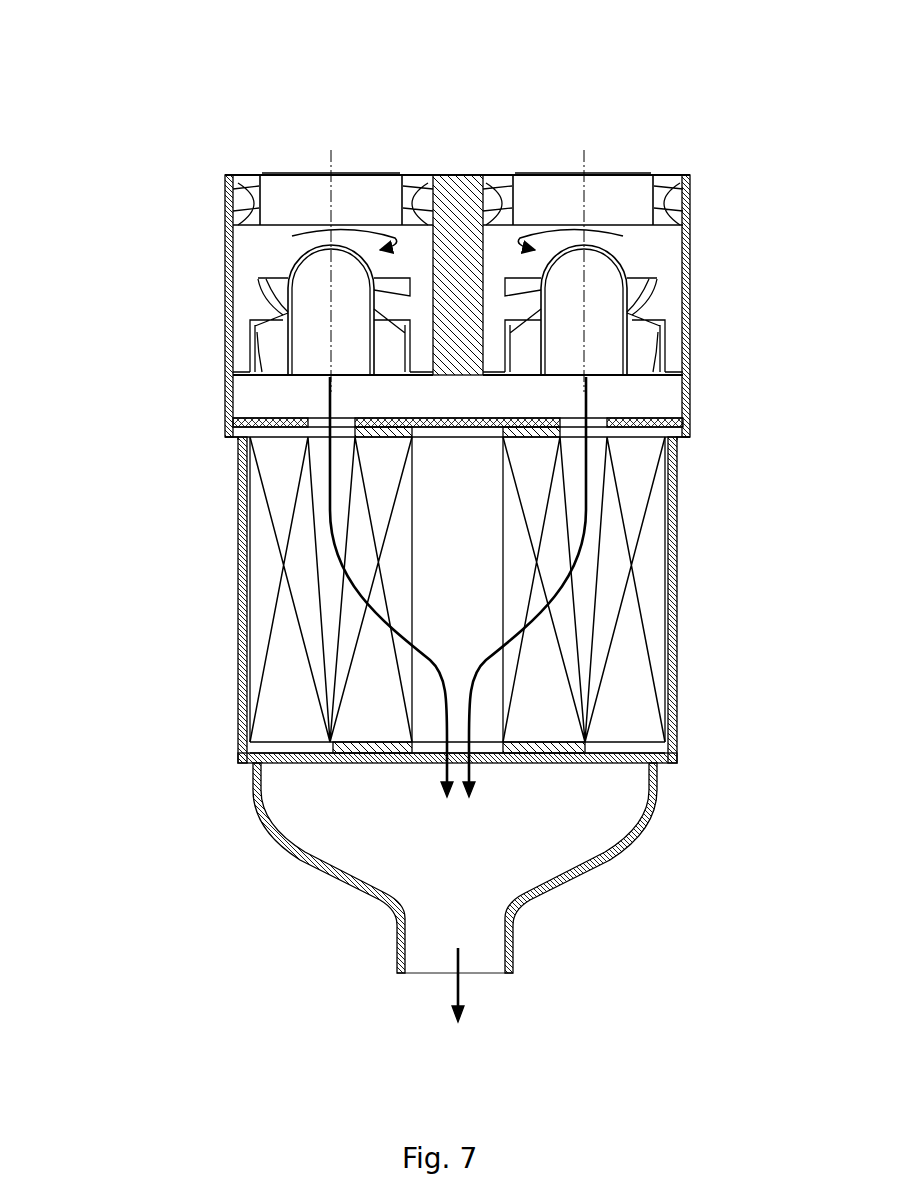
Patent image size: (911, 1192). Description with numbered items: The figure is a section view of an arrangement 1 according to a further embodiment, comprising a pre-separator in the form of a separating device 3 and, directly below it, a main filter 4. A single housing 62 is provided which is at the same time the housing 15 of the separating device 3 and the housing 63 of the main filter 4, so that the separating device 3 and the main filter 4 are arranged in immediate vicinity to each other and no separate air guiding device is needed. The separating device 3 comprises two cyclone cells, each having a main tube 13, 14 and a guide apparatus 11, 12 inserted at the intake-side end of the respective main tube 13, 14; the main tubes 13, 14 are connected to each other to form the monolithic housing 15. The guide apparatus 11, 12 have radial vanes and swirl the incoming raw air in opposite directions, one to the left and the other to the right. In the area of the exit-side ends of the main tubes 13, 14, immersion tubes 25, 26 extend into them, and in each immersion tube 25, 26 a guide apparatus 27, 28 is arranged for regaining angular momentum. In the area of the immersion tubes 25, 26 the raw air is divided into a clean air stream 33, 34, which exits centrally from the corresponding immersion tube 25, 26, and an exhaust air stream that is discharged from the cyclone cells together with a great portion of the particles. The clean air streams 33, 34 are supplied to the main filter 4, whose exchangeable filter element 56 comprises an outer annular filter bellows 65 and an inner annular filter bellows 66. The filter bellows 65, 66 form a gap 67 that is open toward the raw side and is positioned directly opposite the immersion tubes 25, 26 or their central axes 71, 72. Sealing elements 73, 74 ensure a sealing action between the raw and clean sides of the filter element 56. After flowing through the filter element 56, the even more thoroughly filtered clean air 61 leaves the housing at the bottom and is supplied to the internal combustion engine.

The arrangement 1 is at (197, 130).
The separating device 3 is at (768, 170).
The main filter 4 is at (768, 967).
The guide apparatus 11 is at (554, 182).
The guide apparatus 12 is at (361, 182).
The main tube 13 is at (225, 270).
The main tube 14 is at (690, 268).
The housing 15 is at (216, 306).
The immersion tube 25 is at (665, 343).
The immersion tube 26 is at (252, 345).
The guide apparatus 27 is at (614, 282).
The guide apparatus 28 is at (300, 285).
The clean air stream 33 is at (584, 408).
The clean air stream 34 is at (330, 408).
The filter element 56 is at (255, 540).
The clean air 61 is at (462, 985).
The single housing 62 is at (133, 290).
The housing 63 is at (230, 600).
The outer annular filter bellows 65 is at (290, 690).
The inner annular filter bellows 66 is at (372, 742).
The gap 67 is at (323, 460).
The central axis 71 is at (331, 192).
The central axis 72 is at (584, 192).
The sealing element 73 is at (447, 437).
The sealing element 74 is at (237, 415).